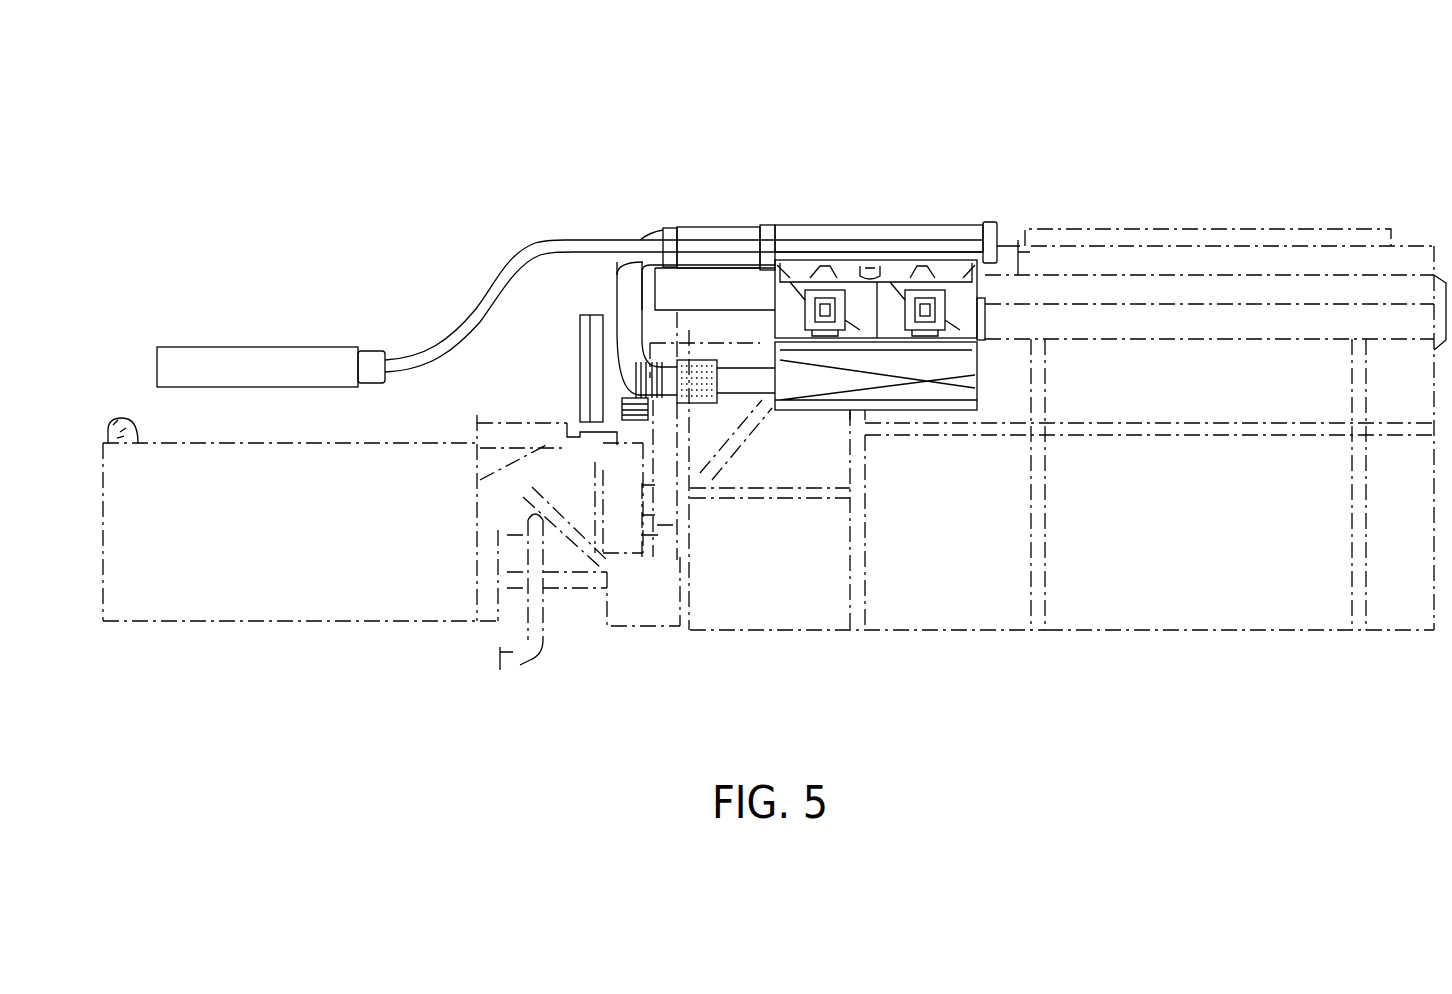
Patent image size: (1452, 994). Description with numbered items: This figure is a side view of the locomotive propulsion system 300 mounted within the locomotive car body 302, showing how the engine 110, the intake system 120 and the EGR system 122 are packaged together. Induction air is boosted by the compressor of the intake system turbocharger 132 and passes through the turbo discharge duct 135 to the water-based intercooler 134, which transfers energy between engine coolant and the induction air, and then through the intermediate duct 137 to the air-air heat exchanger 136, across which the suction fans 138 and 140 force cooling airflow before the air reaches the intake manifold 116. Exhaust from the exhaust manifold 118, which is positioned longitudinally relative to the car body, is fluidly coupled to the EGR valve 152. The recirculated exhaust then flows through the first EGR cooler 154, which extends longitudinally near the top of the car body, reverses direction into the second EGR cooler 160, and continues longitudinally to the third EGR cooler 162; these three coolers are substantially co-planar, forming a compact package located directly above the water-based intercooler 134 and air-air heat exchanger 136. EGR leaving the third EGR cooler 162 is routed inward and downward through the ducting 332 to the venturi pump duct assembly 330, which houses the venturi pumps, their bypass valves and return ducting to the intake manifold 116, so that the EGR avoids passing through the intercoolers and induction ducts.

The locomotive propulsion system 300 is at (178, 116).
The locomotive car body 302 is at (1360, 113).
The engine 110 is at (1086, 191).
The EGR system 122 is at (753, 163).
The second EGR cooler 160 is at (873, 228).
The first EGR cooler 154 is at (612, 247).
The ducting 332 is at (652, 232).
The third EGR cooler 162 is at (692, 232).
The intake system turbocharger 132 is at (607, 325).
The suction fan 140 is at (782, 280).
The venturi pump duct assembly 330 is at (748, 312).
The suction fan 138 is at (977, 320).
The air-air heat exchanger 136 is at (813, 412).
The intermediate duct 137 is at (760, 397).
The water-based intercooler 134 is at (715, 405).
The turbo discharge duct 135 is at (648, 412).
The exhaust manifold 118 is at (257, 367).
The EGR valve 152 is at (372, 365).
The intake manifold 116 is at (477, 486).
The intake system 120 is at (770, 606).